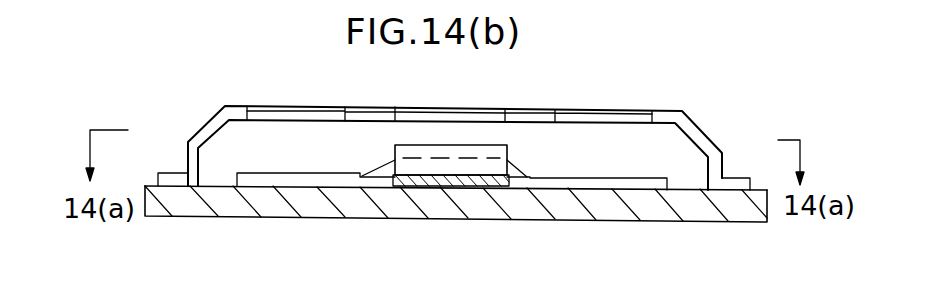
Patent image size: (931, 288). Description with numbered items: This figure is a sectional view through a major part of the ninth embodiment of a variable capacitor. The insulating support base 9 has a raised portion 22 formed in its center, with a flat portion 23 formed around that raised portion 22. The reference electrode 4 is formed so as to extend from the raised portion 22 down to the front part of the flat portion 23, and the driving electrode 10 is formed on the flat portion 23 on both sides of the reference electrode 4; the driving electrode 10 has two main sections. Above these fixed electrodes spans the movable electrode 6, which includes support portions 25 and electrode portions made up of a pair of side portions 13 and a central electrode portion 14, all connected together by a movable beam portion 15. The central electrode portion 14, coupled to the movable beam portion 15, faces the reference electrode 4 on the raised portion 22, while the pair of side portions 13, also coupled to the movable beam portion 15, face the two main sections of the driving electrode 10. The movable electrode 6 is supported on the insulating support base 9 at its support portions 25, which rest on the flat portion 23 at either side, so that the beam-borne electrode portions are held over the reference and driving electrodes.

The reference electrode 4 is at (455, 168).
The movable electrode 6 is at (636, 97).
The insulating support base 9 is at (670, 212).
The driving electrode 10 is at (307, 172).
The side portions 13 is at (316, 108).
The central electrode portion 14 is at (468, 107).
The movable beam portion 15 is at (226, 105).
The raised portion 22 is at (389, 178).
The flat portion 23 is at (229, 181).
The support portions 25 is at (161, 171).